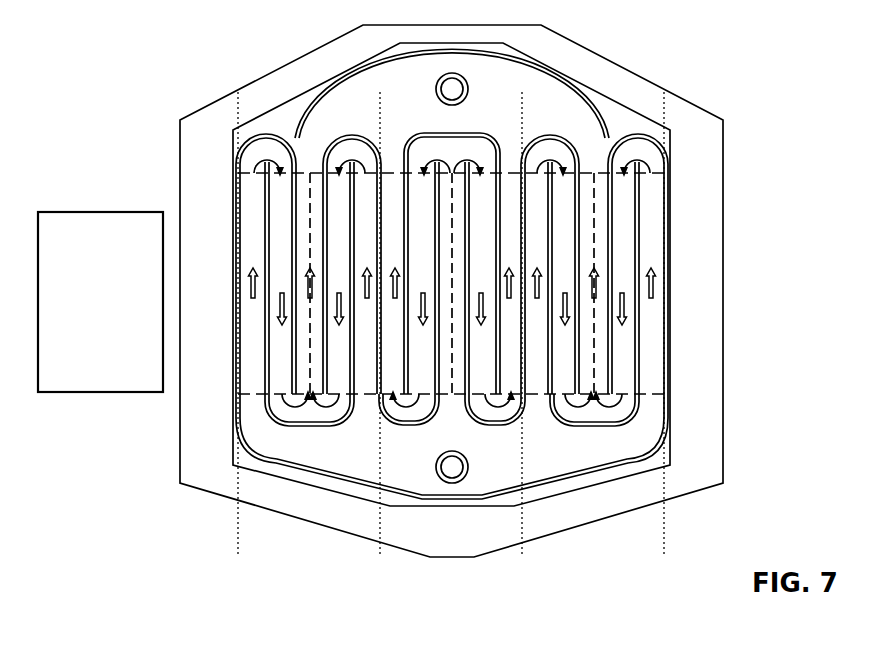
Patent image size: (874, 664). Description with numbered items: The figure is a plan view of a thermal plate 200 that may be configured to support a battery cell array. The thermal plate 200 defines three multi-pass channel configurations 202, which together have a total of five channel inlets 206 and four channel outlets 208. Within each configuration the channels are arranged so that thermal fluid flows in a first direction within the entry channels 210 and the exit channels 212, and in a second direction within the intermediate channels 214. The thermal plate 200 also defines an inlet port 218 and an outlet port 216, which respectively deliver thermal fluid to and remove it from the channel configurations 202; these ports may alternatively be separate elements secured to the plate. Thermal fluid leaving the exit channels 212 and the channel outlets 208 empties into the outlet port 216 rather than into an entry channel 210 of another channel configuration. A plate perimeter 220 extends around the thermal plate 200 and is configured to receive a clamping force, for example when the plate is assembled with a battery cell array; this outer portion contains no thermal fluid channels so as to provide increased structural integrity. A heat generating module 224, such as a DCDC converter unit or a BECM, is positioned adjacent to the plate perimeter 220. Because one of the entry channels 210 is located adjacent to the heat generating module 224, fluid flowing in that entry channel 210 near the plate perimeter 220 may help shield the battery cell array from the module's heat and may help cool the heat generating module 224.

The thermal plate 200 is at (211, 75).
The multi-pass channel configurations 202 is at (664, 556).
The channel inlets 206 is at (363, 412).
The channel outlets 208 is at (393, 152).
The entry channels 210 is at (368, 192).
The exit channels 212 is at (597, 211).
The intermediate channels 214 is at (338, 345).
The outlet port 216 is at (460, 75).
The inlet port 218 is at (449, 483).
The plate perimeter 220 is at (200, 470).
The heat generating module 224 is at (72, 212).